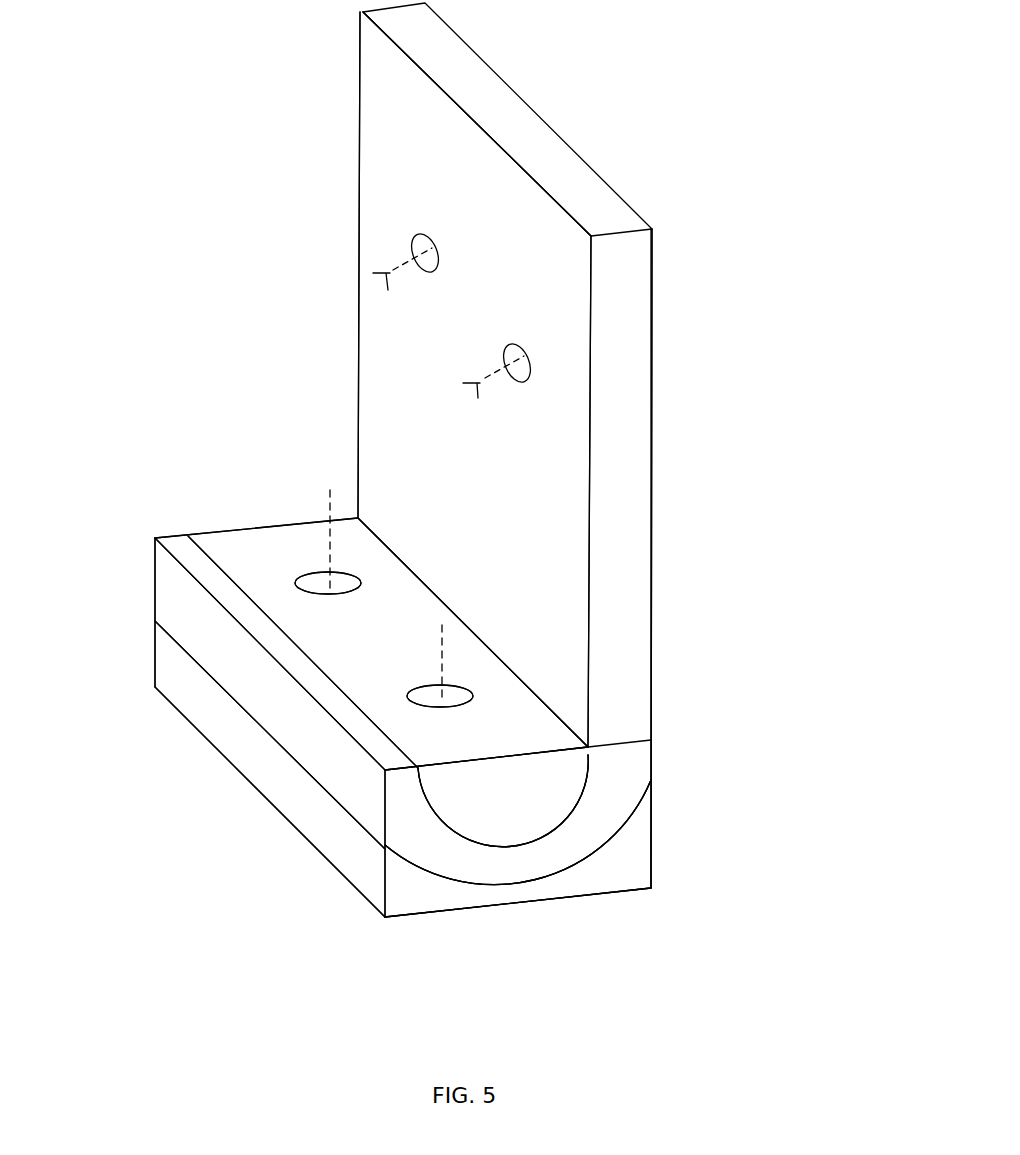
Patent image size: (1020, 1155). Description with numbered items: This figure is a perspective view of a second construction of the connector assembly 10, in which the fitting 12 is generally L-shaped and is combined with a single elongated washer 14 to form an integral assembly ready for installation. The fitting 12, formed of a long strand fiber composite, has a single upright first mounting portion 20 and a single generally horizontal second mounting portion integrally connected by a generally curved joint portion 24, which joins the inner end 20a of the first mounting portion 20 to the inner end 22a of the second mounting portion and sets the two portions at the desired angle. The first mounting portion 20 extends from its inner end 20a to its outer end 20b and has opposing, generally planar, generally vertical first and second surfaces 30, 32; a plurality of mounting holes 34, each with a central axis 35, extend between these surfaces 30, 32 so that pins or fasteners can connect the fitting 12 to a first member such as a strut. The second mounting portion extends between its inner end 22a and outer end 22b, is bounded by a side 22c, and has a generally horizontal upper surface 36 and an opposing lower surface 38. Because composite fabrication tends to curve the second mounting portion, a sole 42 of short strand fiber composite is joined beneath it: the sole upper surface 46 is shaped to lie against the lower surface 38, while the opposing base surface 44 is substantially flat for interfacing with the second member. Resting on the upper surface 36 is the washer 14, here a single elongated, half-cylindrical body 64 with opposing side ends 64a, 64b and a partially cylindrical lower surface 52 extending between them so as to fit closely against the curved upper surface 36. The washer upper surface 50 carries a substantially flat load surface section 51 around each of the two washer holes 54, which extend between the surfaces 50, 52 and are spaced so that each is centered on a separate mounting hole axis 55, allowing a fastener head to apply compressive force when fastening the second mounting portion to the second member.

The connector assembly 10 is at (150, 200).
The fitting 12 is at (702, 457).
The washer 14 is at (210, 495).
The first mounting portion 20 is at (650, 403).
The inner end of first mounting portion 20a is at (622, 743).
The outer end of first mounting portion 20b is at (556, 168).
The inner end of second mounting portion 22a is at (607, 803).
The outer end of second mounting portion 22b is at (258, 698).
The side of second mounting portion 22c is at (548, 865).
The joint portion 24 is at (632, 778).
The first surface of first mounting portion 30 is at (393, 171).
The second surface of first mounting portion 32 is at (652, 288).
The mounting hole 34 is at (417, 235).
The central axis of mounting hole 35 is at (448, 337).
The upper surface of second mounting portion 36 is at (503, 828).
The lower surface of second mounting portion 38 is at (533, 883).
The sole 42 is at (290, 803).
The base surface 44 is at (440, 913).
The upper surface of sole 46 is at (422, 872).
The washer upper surface 50 is at (267, 543).
The load surface section 51 is at (377, 590).
The washer lower surface 52 is at (555, 827).
The washer hole 54 is at (343, 596).
The mounting hole axis 55 is at (333, 502).
The elongated half-cylindrical body 64 is at (300, 530).
The side end of washer body 64a is at (555, 778).
The side end of washer body 64b is at (210, 533).